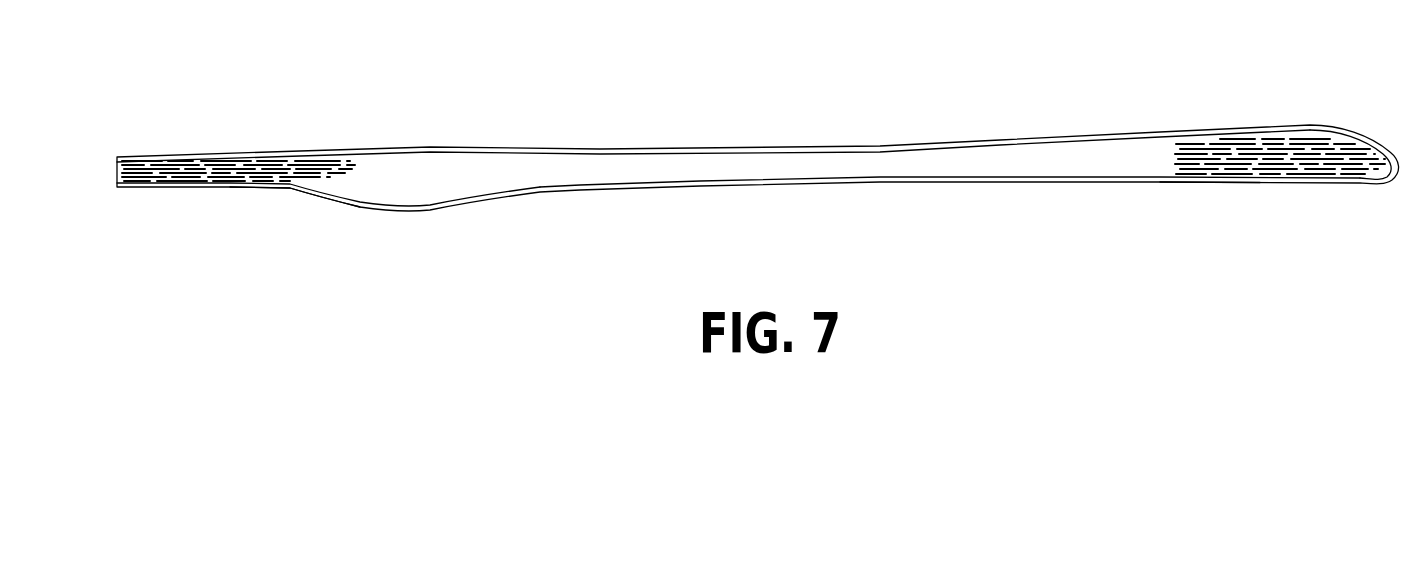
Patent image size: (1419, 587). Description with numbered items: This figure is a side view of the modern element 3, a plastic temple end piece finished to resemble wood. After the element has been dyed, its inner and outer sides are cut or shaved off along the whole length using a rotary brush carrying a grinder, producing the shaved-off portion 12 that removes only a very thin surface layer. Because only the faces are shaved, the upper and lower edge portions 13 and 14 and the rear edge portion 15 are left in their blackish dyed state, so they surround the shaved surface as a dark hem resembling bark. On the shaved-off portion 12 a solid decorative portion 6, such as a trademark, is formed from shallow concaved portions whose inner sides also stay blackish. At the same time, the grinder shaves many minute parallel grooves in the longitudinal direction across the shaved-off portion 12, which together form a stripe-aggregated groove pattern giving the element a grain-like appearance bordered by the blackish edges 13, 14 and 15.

The modern element 3 is at (973, 93).
The solid decorative portion 6 is at (432, 195).
The shaved-off portion 12 is at (570, 180).
The upper edge portion 13 is at (818, 148).
The lower edge portion 14 is at (783, 190).
The rear edge portion 15 is at (1397, 172).